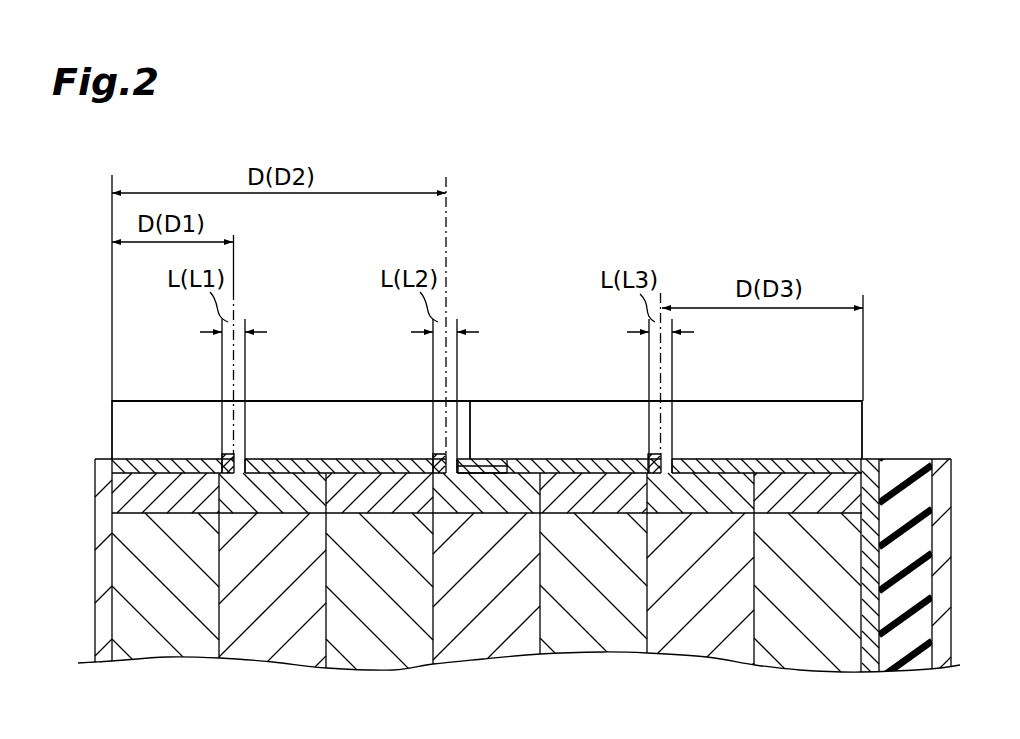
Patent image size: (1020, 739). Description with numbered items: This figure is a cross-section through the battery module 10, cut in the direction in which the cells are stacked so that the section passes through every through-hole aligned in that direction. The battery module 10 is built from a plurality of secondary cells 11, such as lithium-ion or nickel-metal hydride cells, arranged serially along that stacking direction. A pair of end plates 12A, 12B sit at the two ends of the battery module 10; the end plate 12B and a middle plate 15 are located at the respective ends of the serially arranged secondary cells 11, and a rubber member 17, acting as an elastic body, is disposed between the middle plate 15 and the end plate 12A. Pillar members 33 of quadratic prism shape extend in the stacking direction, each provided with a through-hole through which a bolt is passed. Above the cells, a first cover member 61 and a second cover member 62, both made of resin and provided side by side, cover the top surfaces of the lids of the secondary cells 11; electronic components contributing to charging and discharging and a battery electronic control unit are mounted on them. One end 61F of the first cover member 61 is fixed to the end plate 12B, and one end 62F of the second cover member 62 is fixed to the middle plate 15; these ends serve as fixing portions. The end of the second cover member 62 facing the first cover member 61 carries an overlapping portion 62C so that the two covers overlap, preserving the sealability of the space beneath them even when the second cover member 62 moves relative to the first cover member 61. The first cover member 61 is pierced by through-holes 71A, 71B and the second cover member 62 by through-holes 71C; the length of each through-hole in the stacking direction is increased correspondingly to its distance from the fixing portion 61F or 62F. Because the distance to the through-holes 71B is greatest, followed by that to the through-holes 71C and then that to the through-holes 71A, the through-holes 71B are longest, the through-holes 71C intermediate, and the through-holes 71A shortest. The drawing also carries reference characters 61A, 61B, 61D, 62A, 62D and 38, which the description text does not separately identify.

The battery module 10 is at (697, 192).
The secondary cell 11 is at (486, 567).
The end plate 12A is at (941, 567).
The end plate 12B is at (103, 567).
The middle plate 15 is at (870, 569).
The rubber member 17 is at (905, 572).
The pillar member 33 is at (113, 494).
The electrode 38 is at (224, 454).
The first cover member 61 is at (366, 394).
The lower surface of first protective layer 61A is at (152, 458).
The recess of first protective layer 61B is at (490, 462).
The upper surface of first protective layer 61D is at (336, 401).
The fixing portion 61F is at (112, 459).
The second cover member 62 is at (564, 394).
The lower surface of second protective layer 62A is at (823, 458).
The overlapping portion 62C is at (497, 473).
The upper surface of second protective layer 62D is at (763, 401).
The fixing portion 62F is at (862, 459).
The through-hole 71A is at (250, 457).
The through-hole 71B is at (460, 457).
The through-hole 71C is at (675, 457).